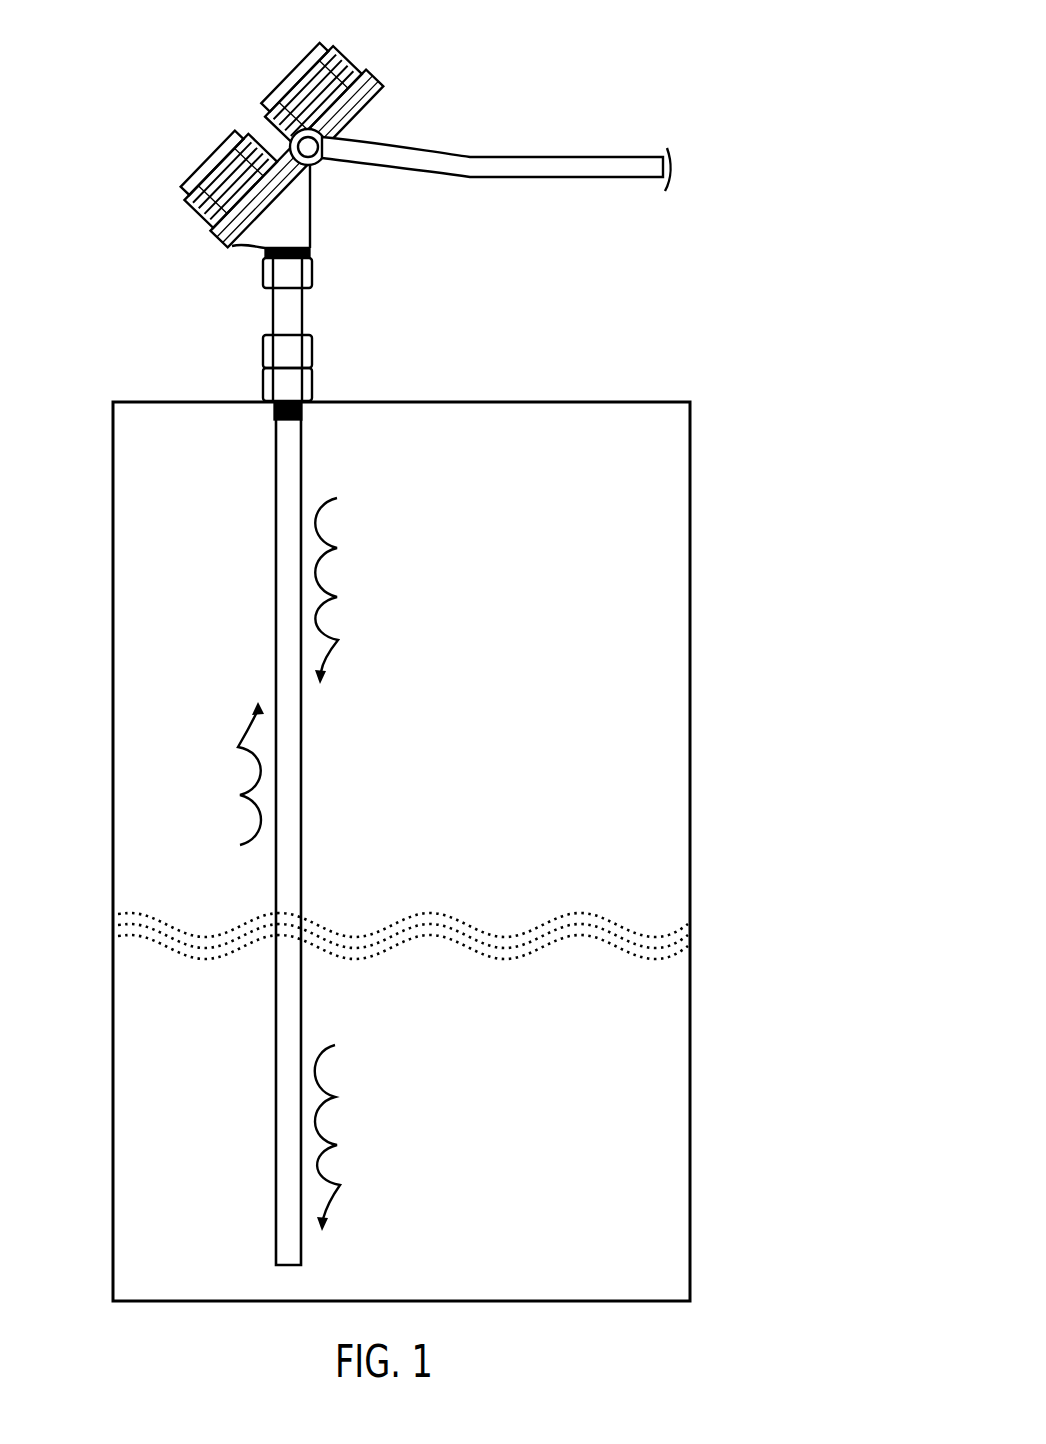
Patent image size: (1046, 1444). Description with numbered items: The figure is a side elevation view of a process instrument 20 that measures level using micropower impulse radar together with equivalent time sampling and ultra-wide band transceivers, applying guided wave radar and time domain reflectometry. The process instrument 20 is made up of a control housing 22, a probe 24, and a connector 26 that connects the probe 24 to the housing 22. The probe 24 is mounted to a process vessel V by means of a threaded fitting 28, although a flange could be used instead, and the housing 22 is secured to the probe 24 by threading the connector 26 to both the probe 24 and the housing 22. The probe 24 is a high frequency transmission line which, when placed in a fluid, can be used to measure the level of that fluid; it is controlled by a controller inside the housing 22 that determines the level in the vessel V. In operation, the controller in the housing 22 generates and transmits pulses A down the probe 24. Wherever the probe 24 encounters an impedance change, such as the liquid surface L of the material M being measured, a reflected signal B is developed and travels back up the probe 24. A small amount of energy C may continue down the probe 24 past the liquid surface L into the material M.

The process instrument 20 is at (388, 223).
The control housing 22 is at (395, 94).
The probe 24 is at (312, 470).
The connector 26 is at (262, 302).
The threaded fitting 28 is at (311, 388).
The process vessel V is at (689, 500).
The liquid surface L is at (495, 904).
The material M is at (592, 1005).
The pulses A is at (353, 576).
The reflected signal B is at (223, 738).
The small amount of energy C is at (353, 1162).